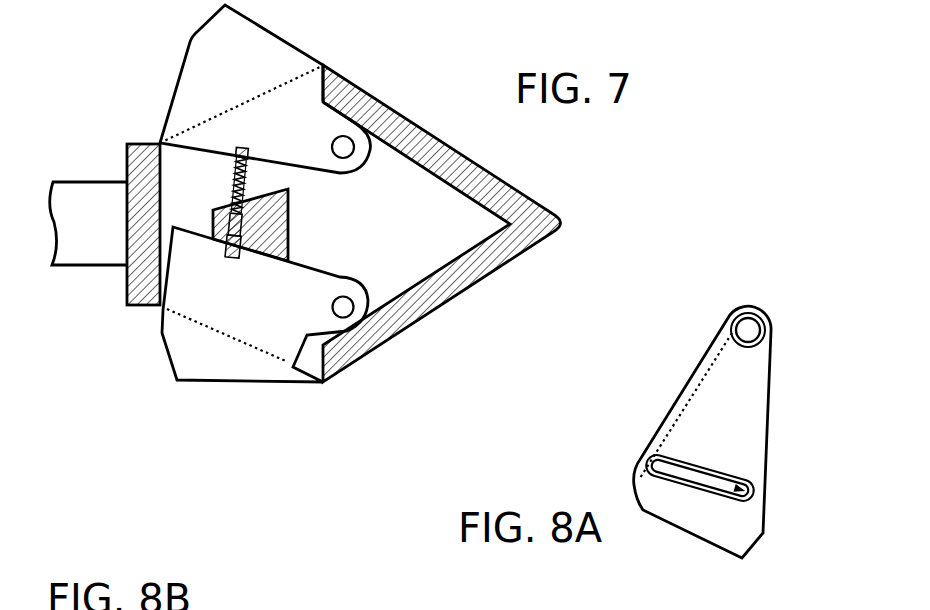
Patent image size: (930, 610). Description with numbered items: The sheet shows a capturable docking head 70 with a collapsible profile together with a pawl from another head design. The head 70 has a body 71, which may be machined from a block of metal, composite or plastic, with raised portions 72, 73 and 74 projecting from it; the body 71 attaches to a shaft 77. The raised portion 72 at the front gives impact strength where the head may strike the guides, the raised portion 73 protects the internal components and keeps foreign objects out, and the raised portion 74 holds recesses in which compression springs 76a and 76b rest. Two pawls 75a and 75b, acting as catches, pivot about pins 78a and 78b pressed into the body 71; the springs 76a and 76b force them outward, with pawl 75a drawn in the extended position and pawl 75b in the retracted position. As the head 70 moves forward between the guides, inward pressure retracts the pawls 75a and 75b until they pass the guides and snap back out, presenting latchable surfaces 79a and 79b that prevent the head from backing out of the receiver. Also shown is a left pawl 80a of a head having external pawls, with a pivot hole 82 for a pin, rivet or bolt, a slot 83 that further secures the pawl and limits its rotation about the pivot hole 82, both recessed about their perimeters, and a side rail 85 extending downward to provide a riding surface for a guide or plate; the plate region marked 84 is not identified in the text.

In FIG. 7, the head 70 is at (614, 176).
In FIG. 7, the body 71 is at (389, 230).
In FIG. 7, the raised portion 72 is at (503, 187).
In FIG. 7, the raised portion 73 is at (127, 287).
In FIG. 7, the raised portion 74 is at (212, 224).
In FIG. 7, the pawl 75a is at (257, 128).
In FIG. 7, the pawl 75b is at (247, 327).
In FIG. 7, the compression spring 76a is at (228, 178).
In FIG. 7, the compression spring 76b is at (251, 262).
In FIG. 7, the shaft 77 is at (83, 181).
In FIG. 7, the pin 78a is at (345, 150).
In FIG. 7, the pin 78b is at (348, 299).
In FIG. 7, the latchable surface 79a is at (172, 95).
In FIG. 7, the latchable surface 79b is at (163, 350).
In FIG. 8A, the left pawl 80a is at (806, 412).
In FIG. 8A, the pivot hole 82 is at (752, 327).
In FIG. 8A, the slot 83 is at (756, 497).
In FIG. 8A, the plate body 84 is at (707, 437).
In FIG. 8A, the side rail 85 is at (660, 422).